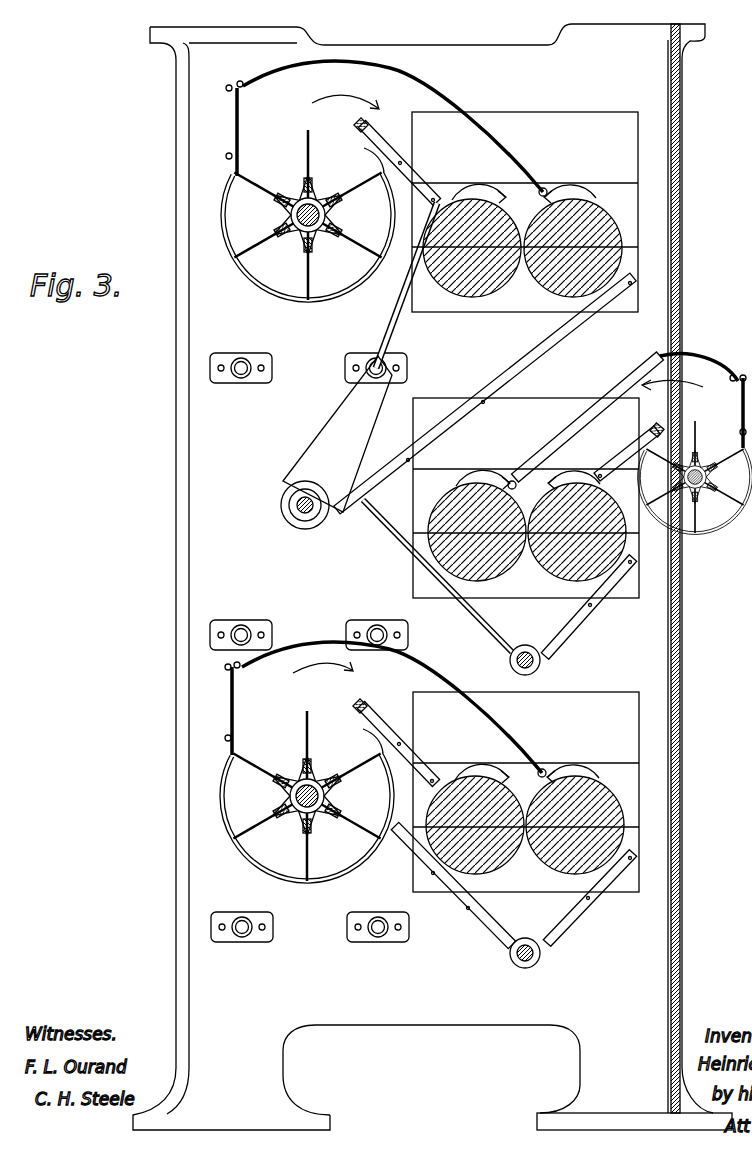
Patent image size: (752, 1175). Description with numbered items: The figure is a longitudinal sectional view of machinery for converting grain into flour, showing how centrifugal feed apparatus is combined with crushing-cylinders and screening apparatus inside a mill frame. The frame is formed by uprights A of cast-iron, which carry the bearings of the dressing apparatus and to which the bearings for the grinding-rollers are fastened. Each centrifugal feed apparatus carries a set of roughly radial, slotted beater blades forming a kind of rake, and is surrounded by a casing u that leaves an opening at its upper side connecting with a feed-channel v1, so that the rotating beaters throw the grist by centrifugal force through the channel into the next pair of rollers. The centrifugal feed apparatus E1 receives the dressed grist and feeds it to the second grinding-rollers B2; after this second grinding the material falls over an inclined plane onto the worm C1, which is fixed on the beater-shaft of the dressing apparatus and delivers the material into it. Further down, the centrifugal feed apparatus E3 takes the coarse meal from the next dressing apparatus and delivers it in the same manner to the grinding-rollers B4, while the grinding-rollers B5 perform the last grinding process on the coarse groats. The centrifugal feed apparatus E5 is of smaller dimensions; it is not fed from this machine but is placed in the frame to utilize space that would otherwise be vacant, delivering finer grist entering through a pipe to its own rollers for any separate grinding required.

The upright A is at (432, 577).
The centrifugal feed apparatus E1 is at (307, 215).
The centrifugal feed apparatus E3 is at (306, 781).
The centrifugal feed apparatus of smaller dimensions E5 is at (695, 477).
The second grinding-rollers B2 is at (522, 248).
The grinding-rollers B4 is at (526, 678).
The grinding-rollers B5 is at (477, 532).
The worm C1 is at (310, 503).
The feed-channel v1 is at (386, 419).
The casing u is at (307, 520).